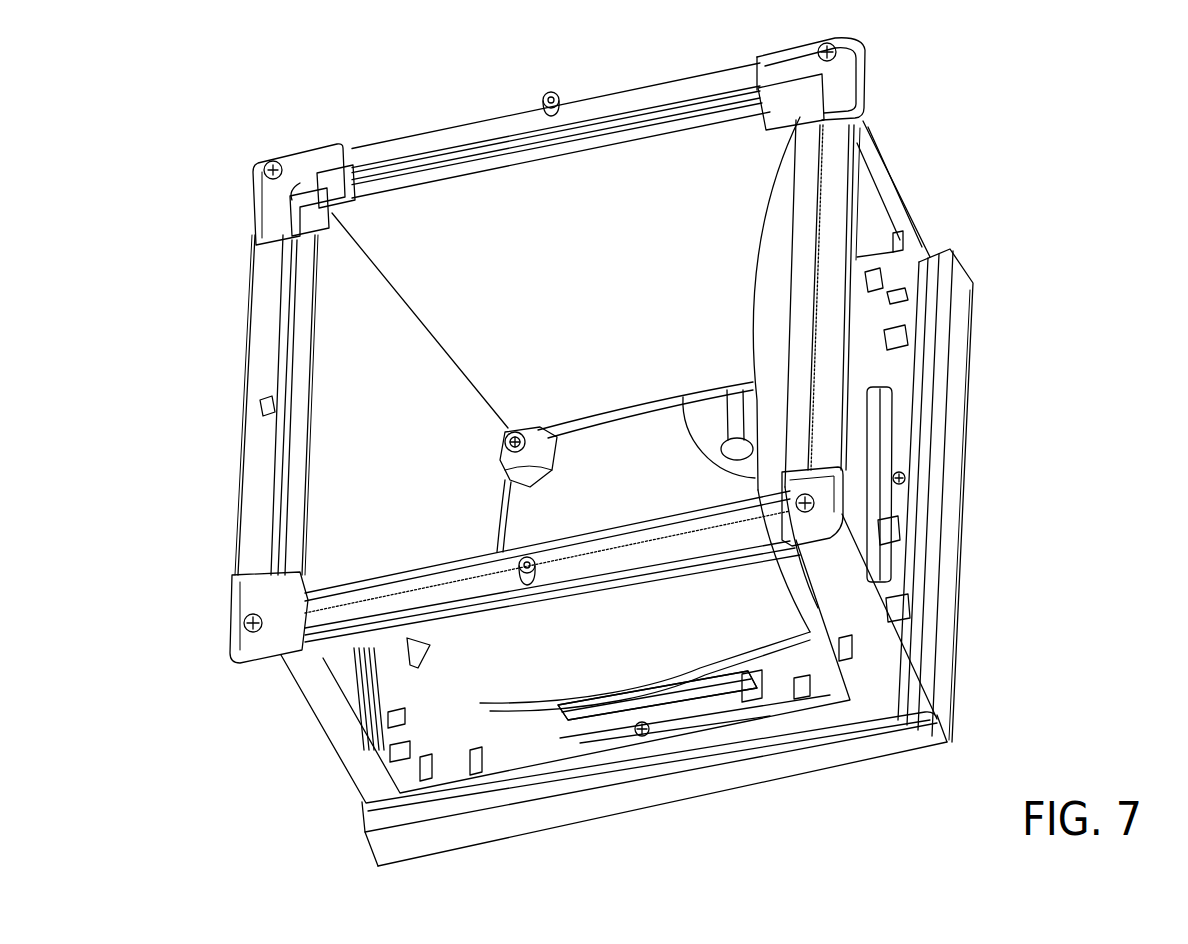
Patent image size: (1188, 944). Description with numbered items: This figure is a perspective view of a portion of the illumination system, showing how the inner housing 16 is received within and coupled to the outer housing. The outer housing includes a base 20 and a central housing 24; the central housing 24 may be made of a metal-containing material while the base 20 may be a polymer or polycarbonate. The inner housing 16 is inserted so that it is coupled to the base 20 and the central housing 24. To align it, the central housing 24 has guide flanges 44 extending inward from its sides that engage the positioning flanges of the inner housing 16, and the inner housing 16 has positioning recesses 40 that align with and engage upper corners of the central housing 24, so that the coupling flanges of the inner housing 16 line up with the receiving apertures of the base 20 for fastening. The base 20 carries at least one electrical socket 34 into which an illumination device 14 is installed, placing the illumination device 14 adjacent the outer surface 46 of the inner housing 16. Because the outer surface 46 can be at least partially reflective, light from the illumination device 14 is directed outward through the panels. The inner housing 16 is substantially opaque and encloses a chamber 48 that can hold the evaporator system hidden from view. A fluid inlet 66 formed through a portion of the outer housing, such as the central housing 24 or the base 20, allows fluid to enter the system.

The illumination device 14 is at (720, 697).
The inner housing 16 is at (608, 205).
The base 20 is at (873, 313).
The central housing 24 is at (945, 735).
The electrical socket 34 is at (720, 697).
The positioning recess 40 is at (330, 192).
The guide flange 44 is at (298, 598).
The outer surface 46 is at (470, 645).
The chamber 48 is at (341, 293).
The fluid inlet 66 is at (662, 488).